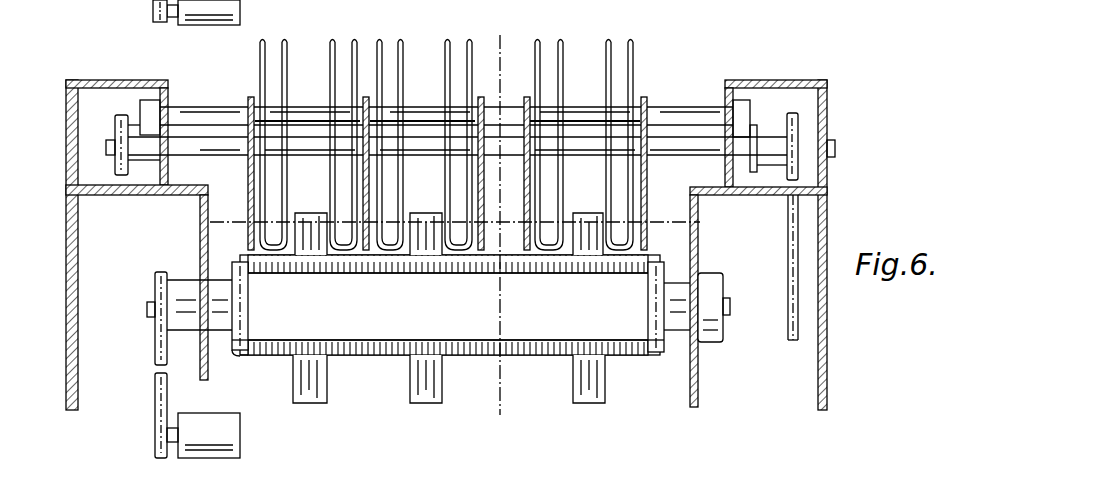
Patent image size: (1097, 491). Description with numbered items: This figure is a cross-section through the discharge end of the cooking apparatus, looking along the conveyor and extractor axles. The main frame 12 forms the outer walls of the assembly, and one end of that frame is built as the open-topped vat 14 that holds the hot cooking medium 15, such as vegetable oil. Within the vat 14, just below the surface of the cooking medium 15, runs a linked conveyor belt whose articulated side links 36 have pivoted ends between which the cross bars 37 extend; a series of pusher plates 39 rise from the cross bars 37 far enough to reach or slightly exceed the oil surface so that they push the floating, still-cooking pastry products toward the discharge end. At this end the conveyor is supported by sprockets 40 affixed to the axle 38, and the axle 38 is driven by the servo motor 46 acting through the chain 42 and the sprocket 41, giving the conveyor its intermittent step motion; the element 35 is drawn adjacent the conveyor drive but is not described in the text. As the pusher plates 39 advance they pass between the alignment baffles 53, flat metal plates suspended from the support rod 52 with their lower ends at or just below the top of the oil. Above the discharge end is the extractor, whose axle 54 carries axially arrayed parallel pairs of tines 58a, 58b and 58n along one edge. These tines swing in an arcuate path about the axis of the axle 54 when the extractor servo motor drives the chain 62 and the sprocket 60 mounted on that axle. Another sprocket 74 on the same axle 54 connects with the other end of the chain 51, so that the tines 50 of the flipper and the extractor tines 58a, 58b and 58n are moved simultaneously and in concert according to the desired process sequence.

The main frame 12 is at (68, 298).
The open-topped vat 14 is at (210, 202).
The cooking medium 15 is at (660, 222).
The drum shaft 35 is at (232, 262).
The side links 36 is at (232, 352).
The cross bars 37 is at (382, 355).
The axle 38 is at (728, 305).
The pusher plates 39 is at (310, 210).
The sprockets 40 is at (250, 326).
The sprocket 41 is at (150, 282).
The chain 42 is at (155, 348).
The servo motor 46 is at (240, 440).
The tines 50 is at (691, 5).
The chain 51 is at (117, 115).
The support rod 52 is at (222, 110).
The alignment baffles 53 is at (480, 170).
The axle 54 is at (180, 145).
The tine 58a is at (368, 50).
The tine 58b is at (462, 45).
The tine 58n is at (630, 48).
The sprocket 60 is at (797, 113).
The chain 62 is at (790, 245).
The sprocket 74 is at (115, 168).